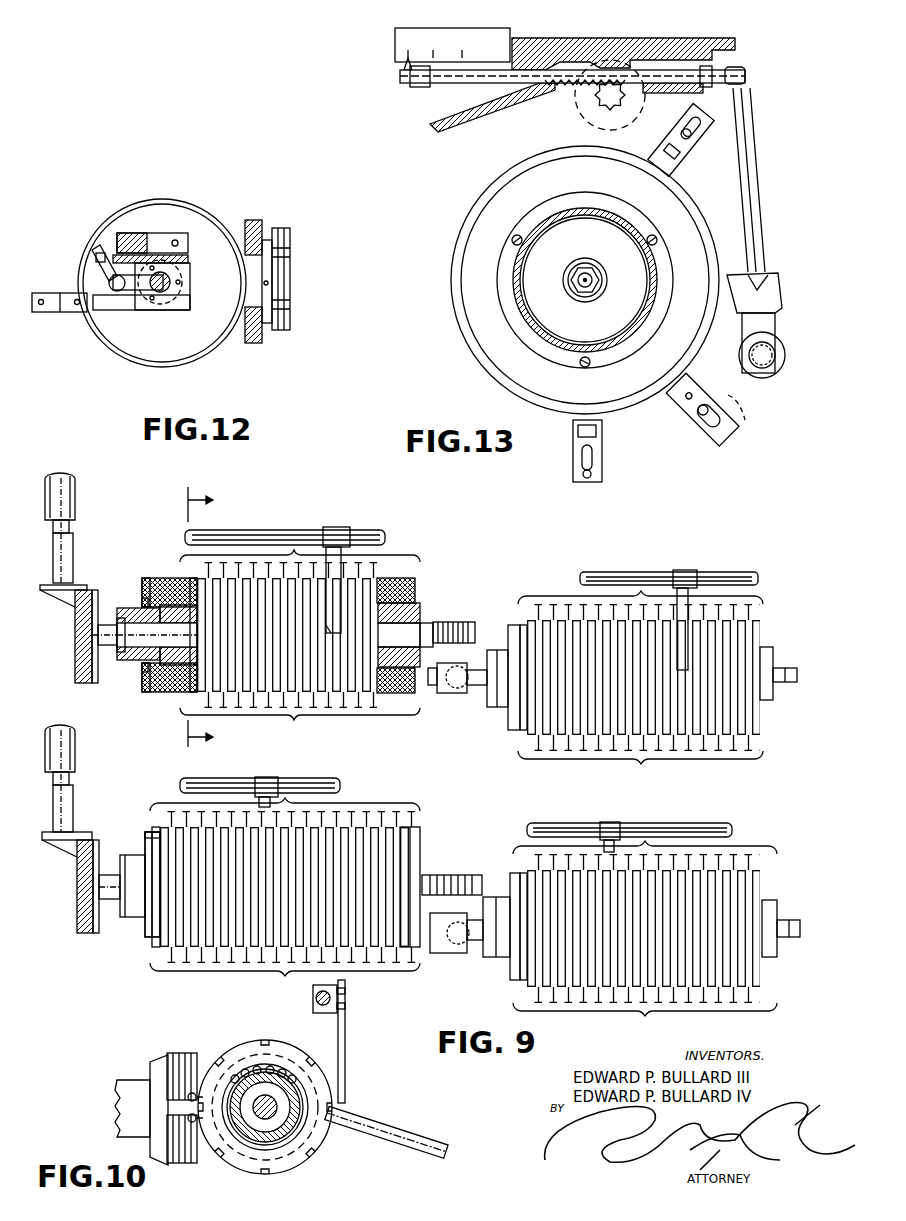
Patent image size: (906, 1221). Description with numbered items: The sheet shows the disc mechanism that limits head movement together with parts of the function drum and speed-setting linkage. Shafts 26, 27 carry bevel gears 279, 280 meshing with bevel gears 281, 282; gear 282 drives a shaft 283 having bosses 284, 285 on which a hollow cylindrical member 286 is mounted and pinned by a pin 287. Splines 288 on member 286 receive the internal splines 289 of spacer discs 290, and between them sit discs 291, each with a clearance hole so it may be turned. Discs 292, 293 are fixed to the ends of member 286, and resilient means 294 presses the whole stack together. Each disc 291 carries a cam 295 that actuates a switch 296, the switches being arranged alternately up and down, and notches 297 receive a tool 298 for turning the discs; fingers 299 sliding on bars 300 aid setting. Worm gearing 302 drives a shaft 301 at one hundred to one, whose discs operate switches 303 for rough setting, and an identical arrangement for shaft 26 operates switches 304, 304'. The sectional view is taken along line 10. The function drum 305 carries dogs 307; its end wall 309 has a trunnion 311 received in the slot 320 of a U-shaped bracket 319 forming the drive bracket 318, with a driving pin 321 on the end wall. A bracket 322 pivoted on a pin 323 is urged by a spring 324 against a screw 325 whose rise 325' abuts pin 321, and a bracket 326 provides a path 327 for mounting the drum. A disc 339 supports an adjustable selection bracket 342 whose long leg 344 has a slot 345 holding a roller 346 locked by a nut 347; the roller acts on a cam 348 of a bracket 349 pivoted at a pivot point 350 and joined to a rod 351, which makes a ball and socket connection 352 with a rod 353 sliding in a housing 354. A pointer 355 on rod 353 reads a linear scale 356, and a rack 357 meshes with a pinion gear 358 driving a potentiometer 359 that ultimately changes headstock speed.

In FIG. 9, the shaft 26 is at (76, 775).
In FIG. 9, the shaft 27 is at (76, 484).
In FIG. 9, the bevel gear 279 is at (78, 830).
In FIG. 9, the bevel gear 280 is at (165, 605).
In FIG. 9, the bevel gear 281 is at (77, 930).
In FIG. 9, the bevel gear 282 is at (75, 678).
In FIG. 9, the shaft 283 is at (104, 648).
In FIG. 10, the shaft 283 is at (275, 1115).
In FIG. 9, the boss 284 is at (120, 655).
In FIG. 9, the boss 285 is at (428, 623).
In FIG. 9, the hollow cylindrical member 286 is at (408, 603).
In FIG. 10, the hollow cylindrical member 286 is at (232, 1078).
In FIG. 9, the pin 287 is at (130, 601).
In FIG. 9, the splines 288 is at (145, 585).
In FIG. 10, the splines 288 is at (278, 1068).
In FIG. 10, the internal splines 289 is at (240, 1068).
In FIG. 9, the spacer discs 290 is at (190, 690).
In FIG. 10, the spacer discs 290 is at (268, 1052).
In FIG. 9, the disc 291 is at (165, 578).
In FIG. 10, the disc 291 is at (310, 1110).
In FIG. 9, the disc 292 is at (145, 672).
In FIG. 9, the disc 293 is at (412, 690).
In FIG. 9, the resilient means 294 is at (146, 578).
In FIG. 10, the cam 295 is at (200, 1095).
In FIG. 9, the switch 296 is at (274, 548).
In FIG. 10, the switch 296 is at (170, 1088).
In FIG. 10, the notches 297 is at (330, 1078).
In FIG. 10, the tool 298 is at (423, 1138).
In FIG. 9, the fingers 299 is at (330, 527).
In FIG. 10, the fingers 299 is at (347, 1045).
In FIG. 9, the bars 300 is at (372, 530).
In FIG. 10, the bars 300 is at (347, 998).
In FIG. 9, the shaft 301 is at (437, 690).
In FIG. 9, the worm gearing 302 is at (476, 612).
In FIG. 9, the switches 303 is at (641, 590).
In FIG. 9, the switches 304 is at (285, 877).
In FIG. 9, the switches 304' is at (641, 922).
In FIG. 12, the function drum 305 is at (135, 218).
In FIG. 12, the dogs 307 is at (208, 204).
In FIG. 12, the end wall 309 is at (113, 235).
In FIG. 12, the trunnion 311 is at (164, 293).
In FIG. 12, the drive bracket 318 is at (161, 332).
In FIG. 12, the U-shaped bracket 319 is at (188, 303).
In FIG. 12, the slot 320 is at (133, 310).
In FIG. 12, the driving pin 321 is at (109, 284).
In FIG. 12, the bracket 322 is at (160, 233).
In FIG. 12, the pin 323 is at (176, 240).
In FIG. 12, the spring 324 is at (130, 233).
In FIG. 12, the screw 325 is at (77, 258).
In FIG. 12, the rise 325' is at (67, 265).
In FIG. 12, the bracket 326 is at (67, 314).
In FIG. 12, the path 327 is at (43, 313).
In FIG. 13, the disc 339 is at (490, 192).
In FIG. 13, the adjustable selection bracket 342 is at (702, 150).
In FIG. 13, the long leg 344 is at (575, 446).
In FIG. 13, the slot 345 is at (583, 455).
In FIG. 13, the roller 346 is at (744, 412).
In FIG. 13, the nut 347 is at (586, 478).
In FIG. 13, the cam 348 is at (768, 272).
In FIG. 13, the bracket 349 is at (772, 333).
In FIG. 13, the pivot point 350 is at (768, 365).
In FIG. 13, the rod 351 is at (752, 192).
In FIG. 13, the rod 352 is at (750, 58).
In FIG. 13, the rod 353 is at (672, 60).
In FIG. 13, the housing 354 is at (578, 55).
In FIG. 13, the pointer 355 is at (400, 70).
In FIG. 13, the linear scale 356 is at (452, 33).
In FIG. 13, the rack 357 is at (562, 88).
In FIG. 13, the pinion gear 358 is at (625, 98).
In FIG. 13, the potentiometer 359 is at (580, 120).
In FIG. 9, the section line 10 is at (196, 618).